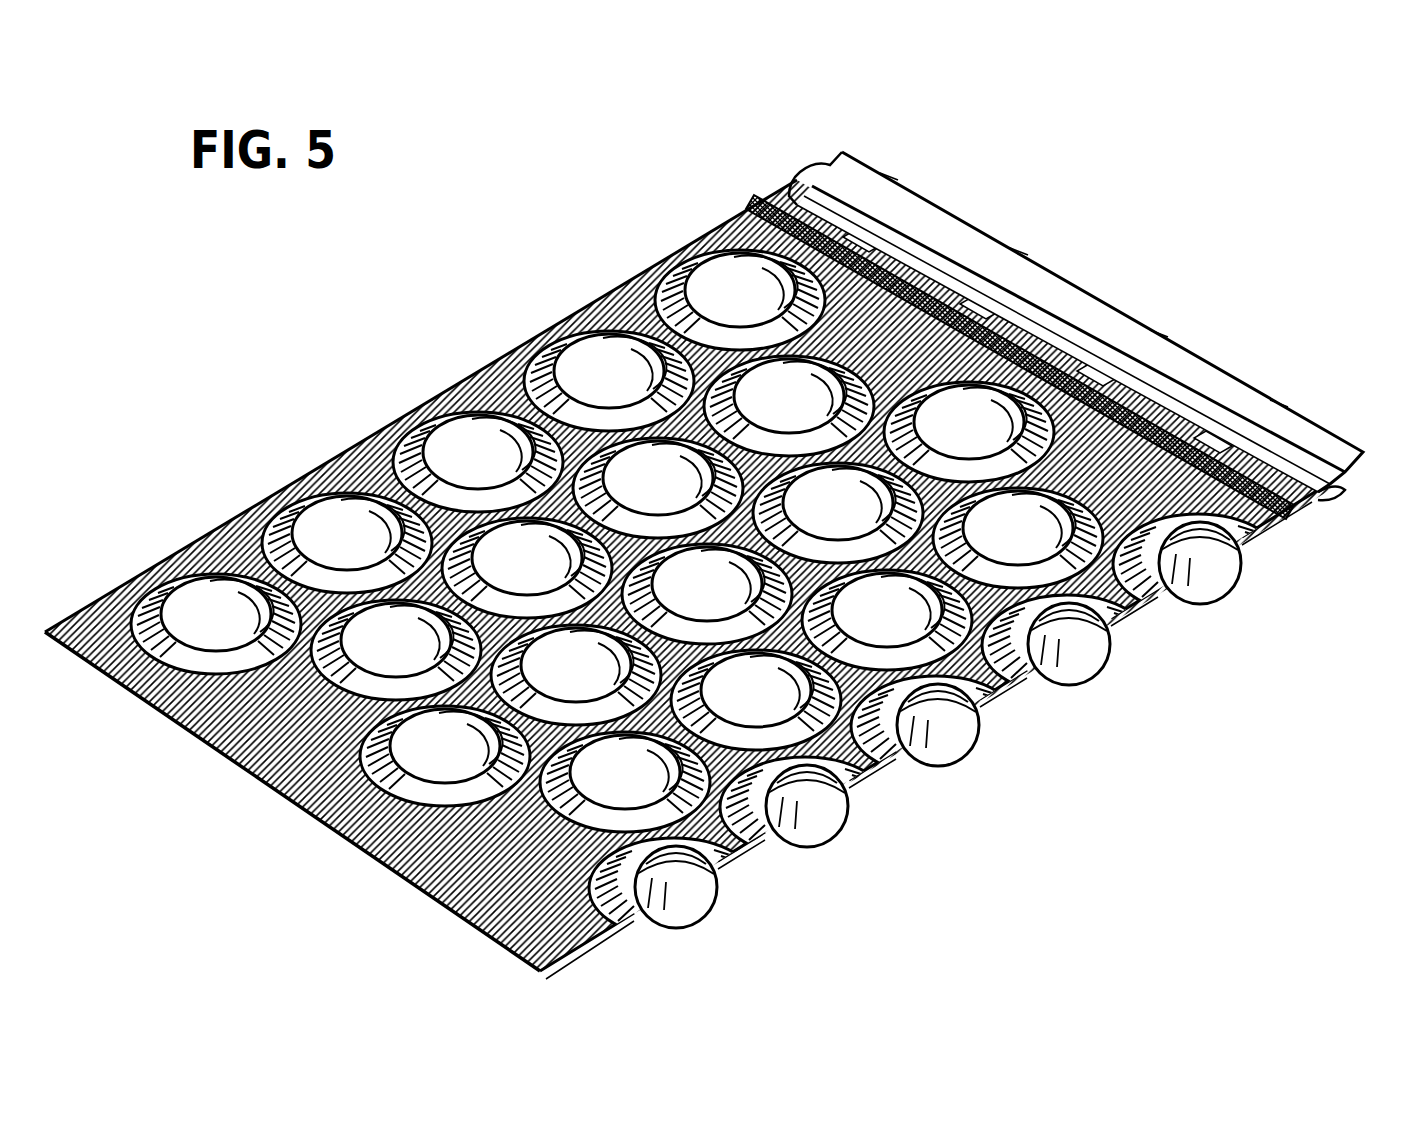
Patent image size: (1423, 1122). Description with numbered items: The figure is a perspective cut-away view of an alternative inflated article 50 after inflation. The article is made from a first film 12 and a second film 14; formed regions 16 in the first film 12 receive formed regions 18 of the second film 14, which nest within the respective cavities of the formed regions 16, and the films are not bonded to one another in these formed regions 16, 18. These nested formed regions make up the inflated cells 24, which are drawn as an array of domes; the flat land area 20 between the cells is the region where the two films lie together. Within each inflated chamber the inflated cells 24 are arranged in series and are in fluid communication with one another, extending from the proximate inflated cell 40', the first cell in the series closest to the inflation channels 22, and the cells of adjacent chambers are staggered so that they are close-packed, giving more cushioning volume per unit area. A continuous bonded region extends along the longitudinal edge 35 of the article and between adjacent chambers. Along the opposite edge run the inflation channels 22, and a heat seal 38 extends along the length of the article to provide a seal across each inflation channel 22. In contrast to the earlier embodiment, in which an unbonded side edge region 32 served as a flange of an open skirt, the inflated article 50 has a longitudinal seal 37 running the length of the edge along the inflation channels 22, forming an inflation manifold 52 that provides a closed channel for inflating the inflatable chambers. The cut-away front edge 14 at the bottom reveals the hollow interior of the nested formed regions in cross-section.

The first film 12 is at (240, 548).
The second film 14 is at (597, 935).
The formed regions in first film 16 is at (472, 445).
The formed regions in second film 18 is at (945, 762).
The flat land region 20 is at (870, 300).
The inflation channels 22 is at (858, 226).
The inflatable cells 24 is at (595, 360).
The unbonded film side edge region 32 is at (822, 180).
The longitudinal edge 35 is at (320, 820).
The longitudinal seal 37 is at (1185, 360).
The heat seal 38 is at (1115, 410).
The dome 40' is at (740, 257).
The inflated article 50 is at (1160, 220).
The inflation manifold 52 is at (1325, 495).